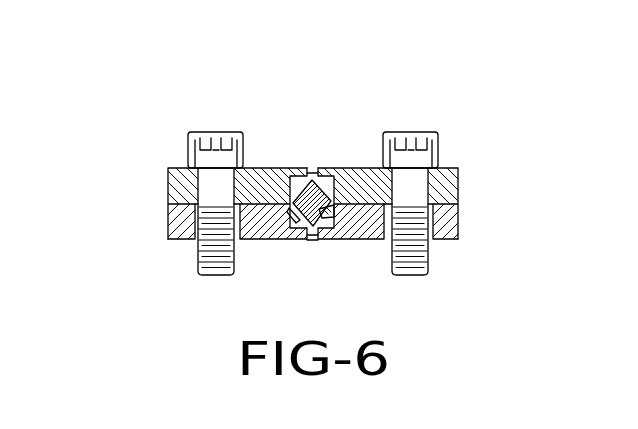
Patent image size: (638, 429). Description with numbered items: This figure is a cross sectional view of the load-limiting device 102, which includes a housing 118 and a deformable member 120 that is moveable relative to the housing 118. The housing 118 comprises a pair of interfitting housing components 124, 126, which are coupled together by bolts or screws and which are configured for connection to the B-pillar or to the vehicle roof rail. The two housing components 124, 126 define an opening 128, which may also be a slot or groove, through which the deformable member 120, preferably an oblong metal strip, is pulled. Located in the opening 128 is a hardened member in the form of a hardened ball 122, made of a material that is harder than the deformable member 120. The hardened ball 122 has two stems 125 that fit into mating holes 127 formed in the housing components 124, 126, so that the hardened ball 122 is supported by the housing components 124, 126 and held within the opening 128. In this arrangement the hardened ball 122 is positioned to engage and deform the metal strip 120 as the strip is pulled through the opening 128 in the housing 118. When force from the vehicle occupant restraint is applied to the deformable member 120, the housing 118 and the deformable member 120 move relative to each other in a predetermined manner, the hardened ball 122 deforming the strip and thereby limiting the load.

The load-limiting device 102 is at (170, 135).
The housing 118 is at (455, 168).
The deformable member 120 is at (286, 215).
The hardened ball 122 is at (298, 192).
The housing component 124 is at (168, 178).
The stem 125 is at (325, 205).
The housing component 126 is at (167, 228).
The mating hole 127 is at (312, 178).
The opening 128 is at (336, 205).